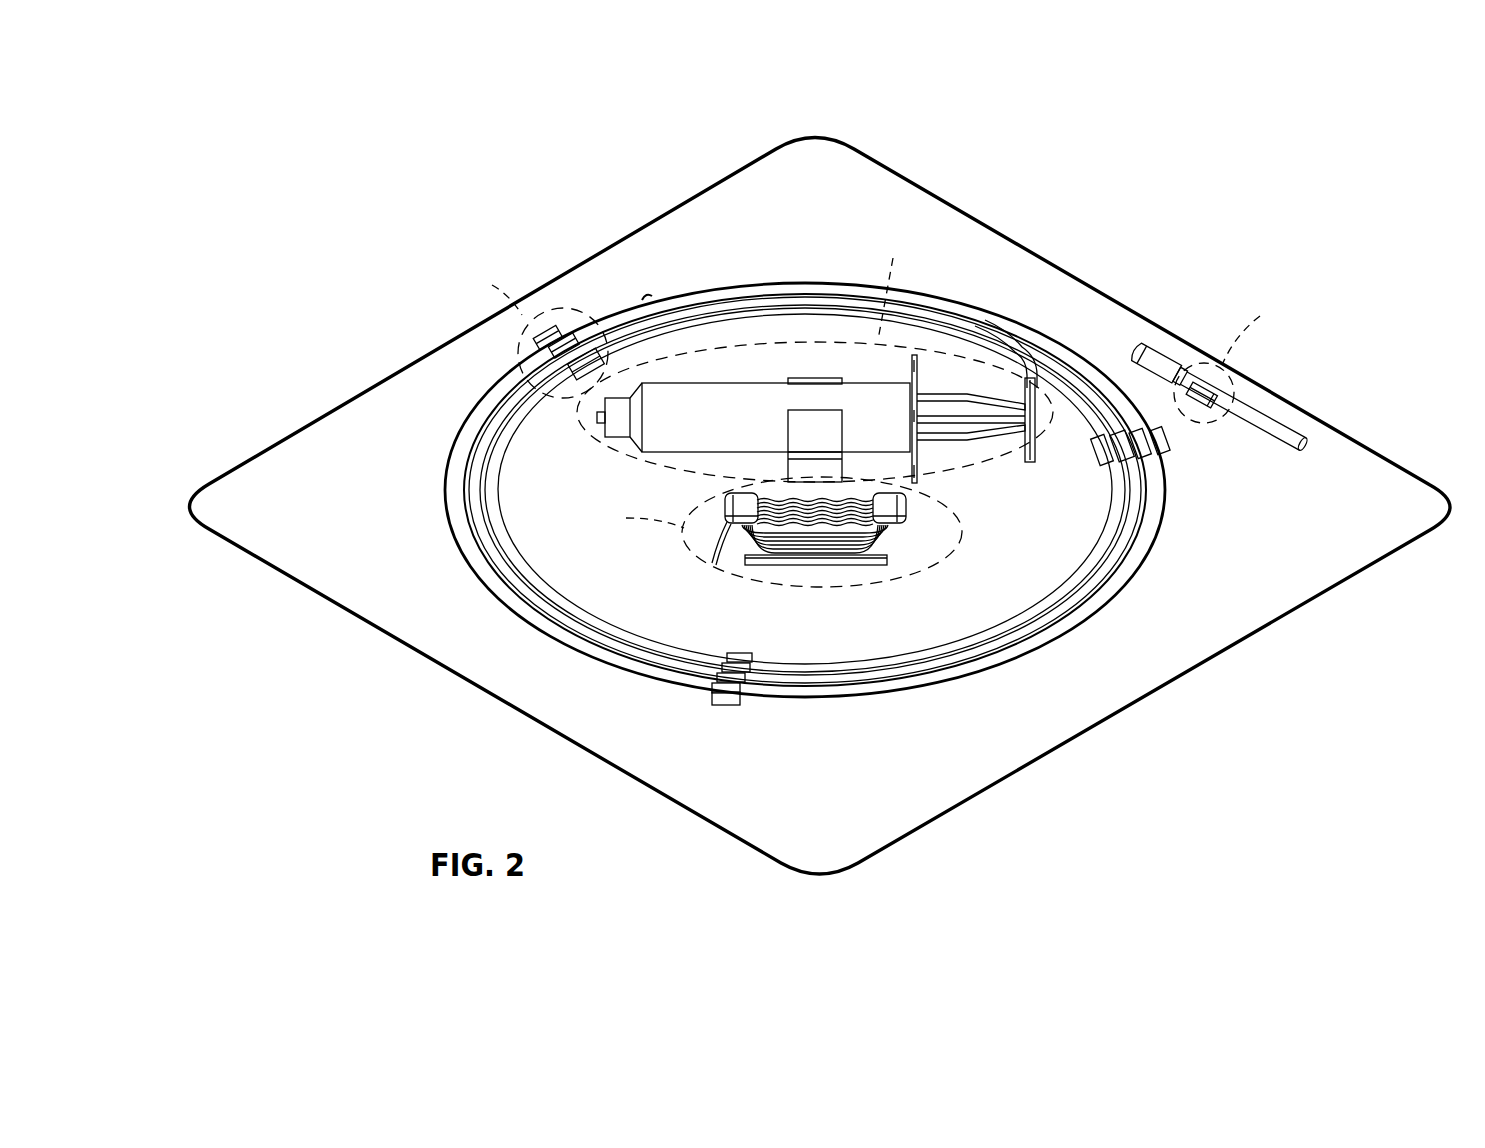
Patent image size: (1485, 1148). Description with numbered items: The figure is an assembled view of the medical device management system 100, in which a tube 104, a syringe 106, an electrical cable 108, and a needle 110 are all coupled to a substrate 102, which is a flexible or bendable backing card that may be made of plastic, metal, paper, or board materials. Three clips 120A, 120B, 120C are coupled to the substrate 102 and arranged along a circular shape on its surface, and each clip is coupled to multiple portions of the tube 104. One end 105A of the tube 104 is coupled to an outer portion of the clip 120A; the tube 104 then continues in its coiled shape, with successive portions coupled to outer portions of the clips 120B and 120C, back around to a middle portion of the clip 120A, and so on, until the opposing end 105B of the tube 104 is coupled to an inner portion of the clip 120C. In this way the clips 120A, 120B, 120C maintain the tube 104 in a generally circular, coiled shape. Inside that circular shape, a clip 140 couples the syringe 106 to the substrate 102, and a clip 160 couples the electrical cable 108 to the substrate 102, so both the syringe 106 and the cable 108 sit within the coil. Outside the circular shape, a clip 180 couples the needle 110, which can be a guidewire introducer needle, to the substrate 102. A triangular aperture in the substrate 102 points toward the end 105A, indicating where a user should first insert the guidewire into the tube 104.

The medical device management system 100 is at (236, 158).
The substrate 102 is at (219, 486).
The tube 104 is at (492, 394).
The end of the tube 105A is at (647, 295).
The opposing end of the tube 105B is at (1018, 358).
The syringe 106 is at (716, 400).
The electrical cable 108 is at (712, 553).
The needle 110 is at (1150, 358).
The clip 120A is at (542, 333).
The clip 120B is at (722, 701).
The clip 120C is at (1166, 437).
The clip 140 is at (816, 377).
The clip 160 is at (890, 506).
The clip 180 is at (1218, 380).